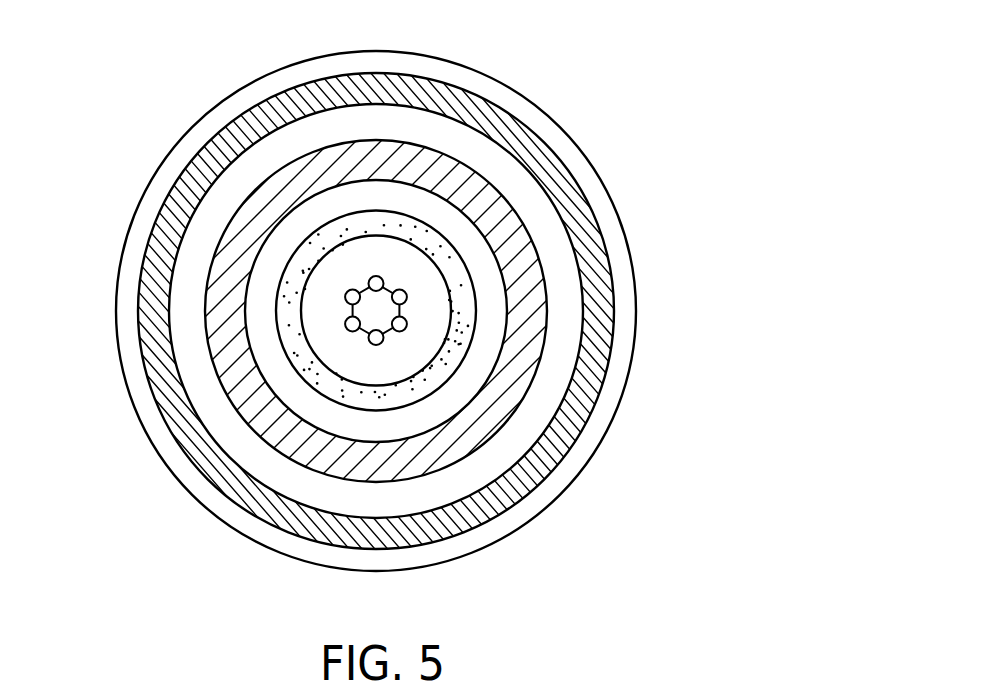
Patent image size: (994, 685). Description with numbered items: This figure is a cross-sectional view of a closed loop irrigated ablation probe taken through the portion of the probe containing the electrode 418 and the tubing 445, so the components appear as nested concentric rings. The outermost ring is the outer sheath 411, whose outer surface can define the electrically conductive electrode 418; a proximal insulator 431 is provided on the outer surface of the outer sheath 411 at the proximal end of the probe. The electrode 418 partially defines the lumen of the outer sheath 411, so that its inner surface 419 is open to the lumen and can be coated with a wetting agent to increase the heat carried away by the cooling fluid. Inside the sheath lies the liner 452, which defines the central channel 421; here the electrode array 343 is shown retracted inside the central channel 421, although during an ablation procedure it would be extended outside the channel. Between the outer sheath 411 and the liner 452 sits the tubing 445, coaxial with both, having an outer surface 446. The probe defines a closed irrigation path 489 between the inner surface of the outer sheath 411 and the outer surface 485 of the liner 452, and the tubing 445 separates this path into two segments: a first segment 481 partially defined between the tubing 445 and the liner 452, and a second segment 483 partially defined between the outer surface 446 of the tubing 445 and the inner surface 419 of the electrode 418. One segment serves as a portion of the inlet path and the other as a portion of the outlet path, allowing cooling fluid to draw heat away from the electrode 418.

The proximal insulator 431 is at (477, 82).
The outer sheath 411 is at (528, 145).
The electrode 418 is at (570, 185).
The inner surface of the electrode 419 is at (351, 107).
The second segment 483 is at (552, 247).
The closed irrigation path 489 is at (266, 158).
The outer surface of the tubing 446 is at (222, 388).
The tubing 445 is at (532, 332).
The first segment 481 is at (489, 313).
The liner 452 is at (433, 375).
The outer surface of the liner 485 is at (297, 248).
The central channel 421 is at (353, 355).
The electrode array 343 is at (346, 297).